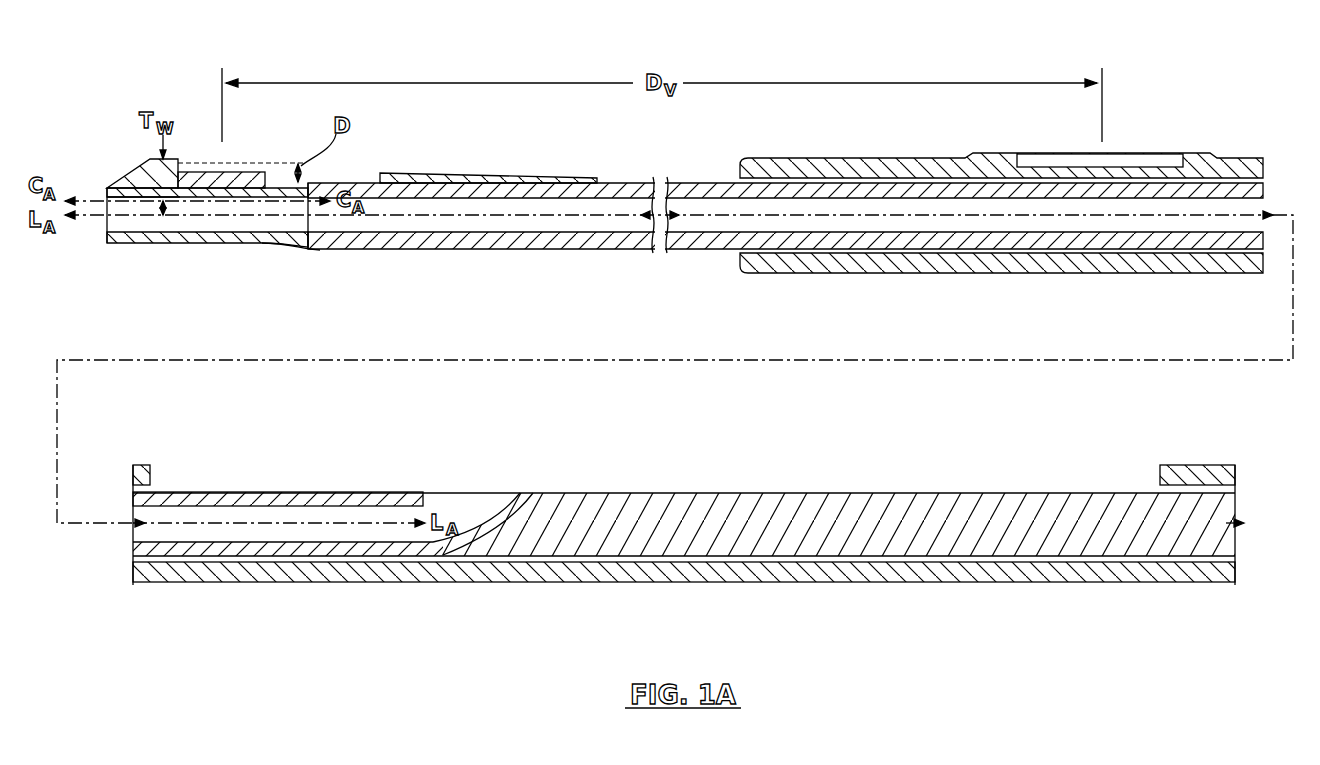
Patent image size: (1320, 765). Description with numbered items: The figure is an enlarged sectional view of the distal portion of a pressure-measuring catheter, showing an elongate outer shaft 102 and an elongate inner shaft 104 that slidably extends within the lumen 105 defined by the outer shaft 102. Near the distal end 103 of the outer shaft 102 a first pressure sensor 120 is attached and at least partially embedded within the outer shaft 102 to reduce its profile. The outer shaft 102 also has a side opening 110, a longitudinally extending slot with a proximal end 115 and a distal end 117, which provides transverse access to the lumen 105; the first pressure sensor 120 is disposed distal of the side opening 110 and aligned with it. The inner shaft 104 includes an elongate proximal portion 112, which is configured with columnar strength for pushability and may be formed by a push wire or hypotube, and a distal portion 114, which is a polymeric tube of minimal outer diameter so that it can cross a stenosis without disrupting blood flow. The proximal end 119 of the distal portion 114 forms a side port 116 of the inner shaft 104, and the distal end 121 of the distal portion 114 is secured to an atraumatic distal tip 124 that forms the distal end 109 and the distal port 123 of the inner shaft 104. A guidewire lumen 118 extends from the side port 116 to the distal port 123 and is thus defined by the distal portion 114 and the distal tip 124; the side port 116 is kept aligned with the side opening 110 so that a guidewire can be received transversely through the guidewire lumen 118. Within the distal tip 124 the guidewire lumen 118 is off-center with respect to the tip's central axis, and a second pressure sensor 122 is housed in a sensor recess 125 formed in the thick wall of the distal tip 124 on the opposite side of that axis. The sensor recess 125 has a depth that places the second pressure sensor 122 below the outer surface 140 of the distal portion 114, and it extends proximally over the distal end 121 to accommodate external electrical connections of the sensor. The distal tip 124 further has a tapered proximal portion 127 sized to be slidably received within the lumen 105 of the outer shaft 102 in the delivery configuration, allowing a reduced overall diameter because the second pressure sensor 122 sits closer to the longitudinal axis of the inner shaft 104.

The outer shaft 102 is at (1033, 274).
The distal end of outer shaft 103 is at (745, 271).
The inner shaft 104 is at (626, 258).
The lumen 105 is at (880, 254).
The distal end of inner shaft 109 is at (107, 246).
The side opening 110 is at (879, 462).
The proximal portion of inner shaft 112 is at (788, 495).
The distal portion of inner shaft 114 is at (708, 183).
The proximal end of side opening 115 is at (1158, 477).
The side port 116 is at (470, 495).
The distal end of side opening 117 is at (153, 473).
The guidewire lumen 118 is at (742, 226).
The proximal end of distal portion 119 is at (517, 527).
The first pressure sensor 120 is at (1148, 153).
The distal end of distal portion 121 is at (310, 251).
The second pressure sensor 122 is at (247, 172).
The distal port 123 is at (113, 222).
The distal tip 124 is at (200, 248).
The sensor recess 125 is at (180, 158).
The tapered proximal portion 127 is at (490, 174).
The outer surface of distal portion 140 is at (347, 182).